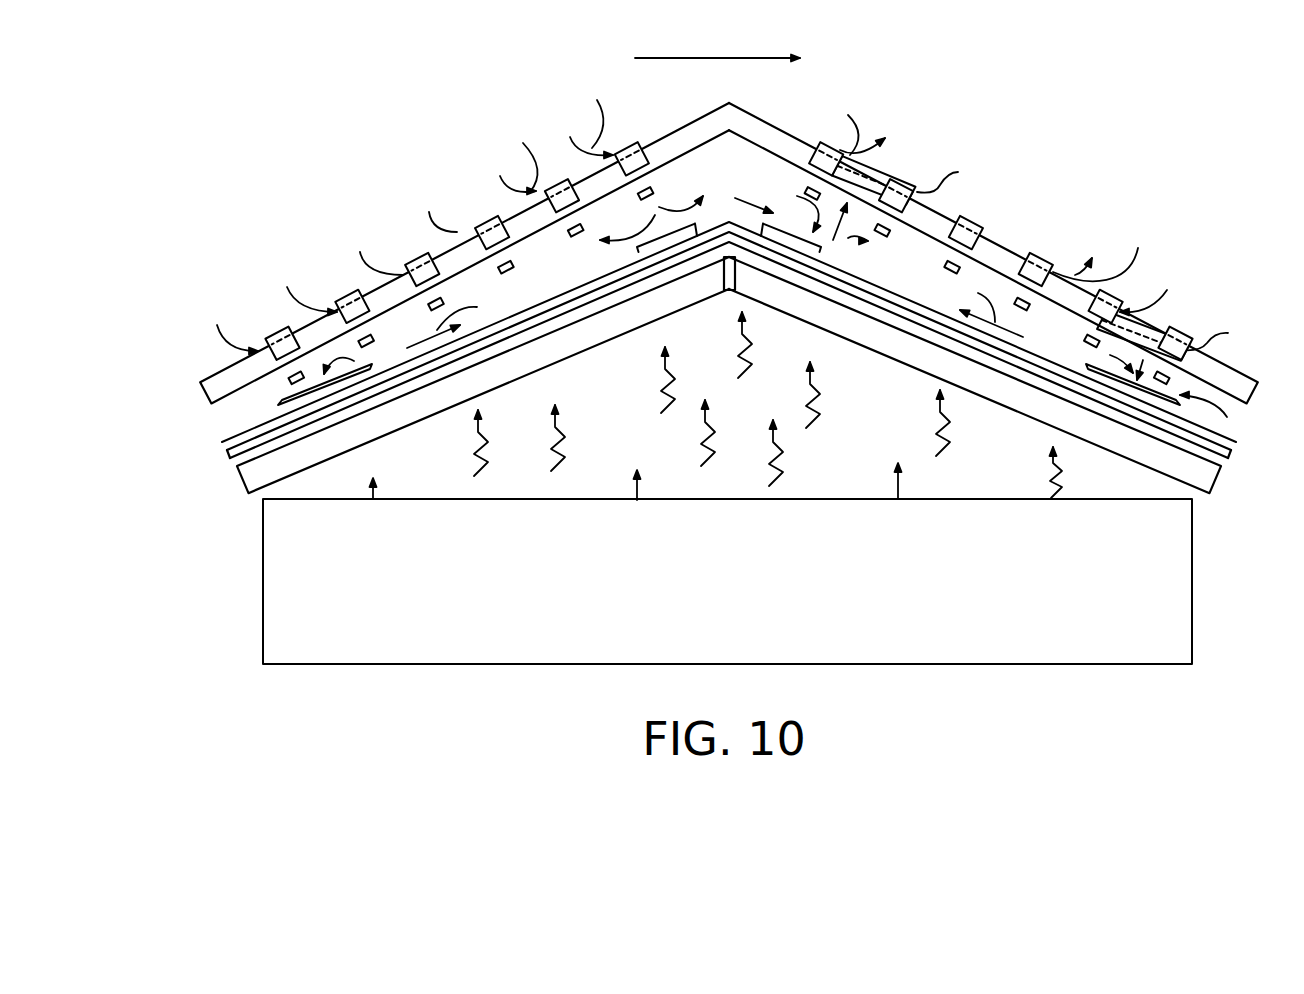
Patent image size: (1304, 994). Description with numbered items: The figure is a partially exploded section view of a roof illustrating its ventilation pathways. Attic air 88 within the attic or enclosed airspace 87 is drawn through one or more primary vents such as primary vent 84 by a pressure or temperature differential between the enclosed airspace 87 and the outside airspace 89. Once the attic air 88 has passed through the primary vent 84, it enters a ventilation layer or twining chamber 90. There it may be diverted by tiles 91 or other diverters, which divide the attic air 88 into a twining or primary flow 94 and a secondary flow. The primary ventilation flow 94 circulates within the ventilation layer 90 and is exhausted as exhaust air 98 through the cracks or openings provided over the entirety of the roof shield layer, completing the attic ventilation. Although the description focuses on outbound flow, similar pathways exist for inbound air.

The primary vent 84 is at (270, 406).
The attic or enclosed airspace 87 is at (817, 467).
The attic air 88 is at (673, 399).
The outside airspace 89 is at (447, 137).
The ventilation layer or twining chamber 90 is at (517, 290).
The tiles 91 is at (443, 258).
The primary ventilation flow 94 is at (789, 307).
The exhaust air 98 is at (722, 227).